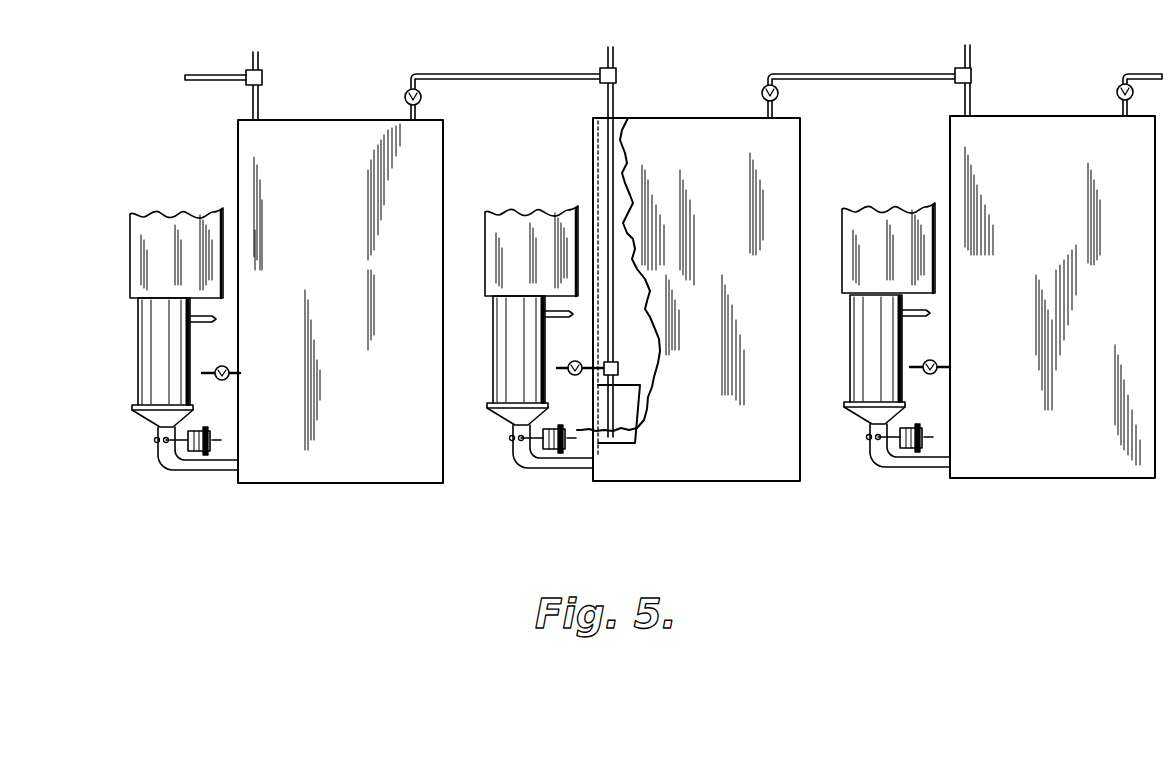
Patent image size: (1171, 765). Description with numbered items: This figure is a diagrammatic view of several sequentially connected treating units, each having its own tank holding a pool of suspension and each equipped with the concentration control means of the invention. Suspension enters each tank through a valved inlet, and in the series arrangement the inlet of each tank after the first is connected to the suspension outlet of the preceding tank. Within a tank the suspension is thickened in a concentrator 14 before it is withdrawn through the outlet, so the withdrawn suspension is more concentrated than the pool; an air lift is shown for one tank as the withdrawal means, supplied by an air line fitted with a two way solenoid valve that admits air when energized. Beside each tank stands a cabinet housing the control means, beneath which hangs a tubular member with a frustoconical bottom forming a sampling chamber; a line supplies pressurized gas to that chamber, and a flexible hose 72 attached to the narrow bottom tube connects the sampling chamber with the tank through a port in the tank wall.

The concentrator 14 is at (641, 396).
The flexible hose 72 is at (552, 471).